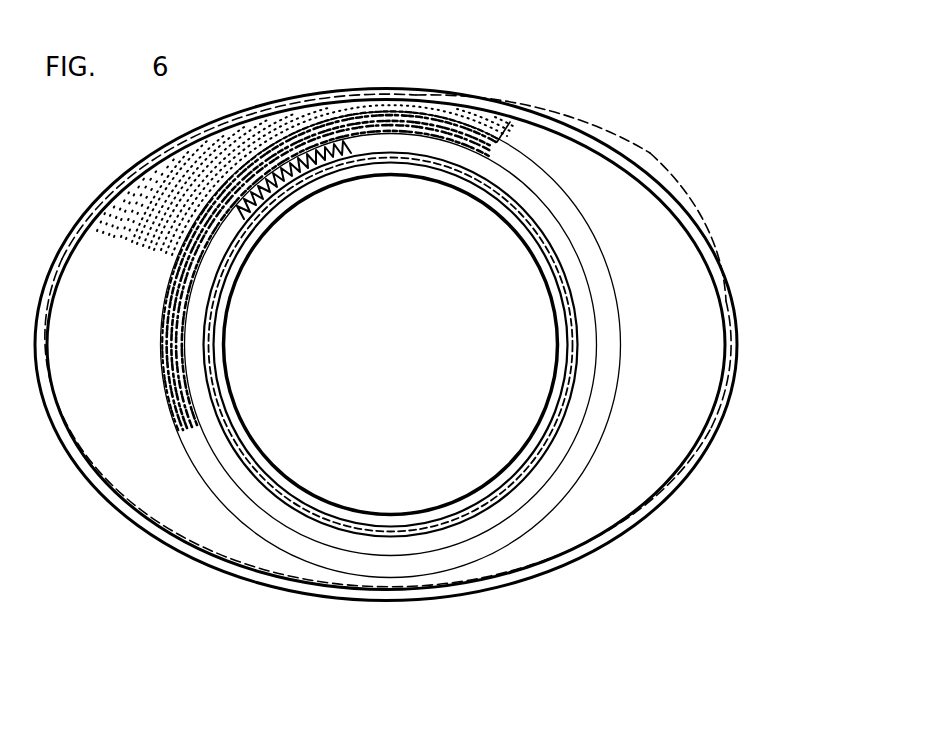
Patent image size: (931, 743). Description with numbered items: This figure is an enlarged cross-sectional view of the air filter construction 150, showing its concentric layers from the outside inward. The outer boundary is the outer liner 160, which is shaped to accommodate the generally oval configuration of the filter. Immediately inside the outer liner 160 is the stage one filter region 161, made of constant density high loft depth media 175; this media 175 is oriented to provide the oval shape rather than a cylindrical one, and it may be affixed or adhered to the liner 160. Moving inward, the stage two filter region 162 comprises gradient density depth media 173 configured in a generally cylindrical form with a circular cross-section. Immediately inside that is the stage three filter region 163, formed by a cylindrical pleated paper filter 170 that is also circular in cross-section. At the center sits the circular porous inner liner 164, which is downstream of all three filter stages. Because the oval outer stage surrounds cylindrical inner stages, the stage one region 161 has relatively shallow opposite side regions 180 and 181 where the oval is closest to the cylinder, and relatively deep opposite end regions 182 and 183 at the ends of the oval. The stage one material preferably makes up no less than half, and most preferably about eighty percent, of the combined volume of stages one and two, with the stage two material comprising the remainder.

The air filter construction 150 is at (696, 480).
The outer liner 160 is at (310, 88).
The stage 1 filter region 161 is at (600, 170).
The stage 2 filter region 162 is at (601, 280).
The stage 3 filter region 163 is at (592, 336).
The inner liner 164 is at (554, 389).
The pleated paper filter 170 is at (270, 196).
The gradient density depth media 173 is at (500, 142).
The constant density high loft depth media 175 is at (668, 242).
The shallow side region 180 is at (403, 90).
The shallow side region 181 is at (410, 589).
The deep end region 182 is at (712, 322).
The deep end region 183 is at (128, 318).